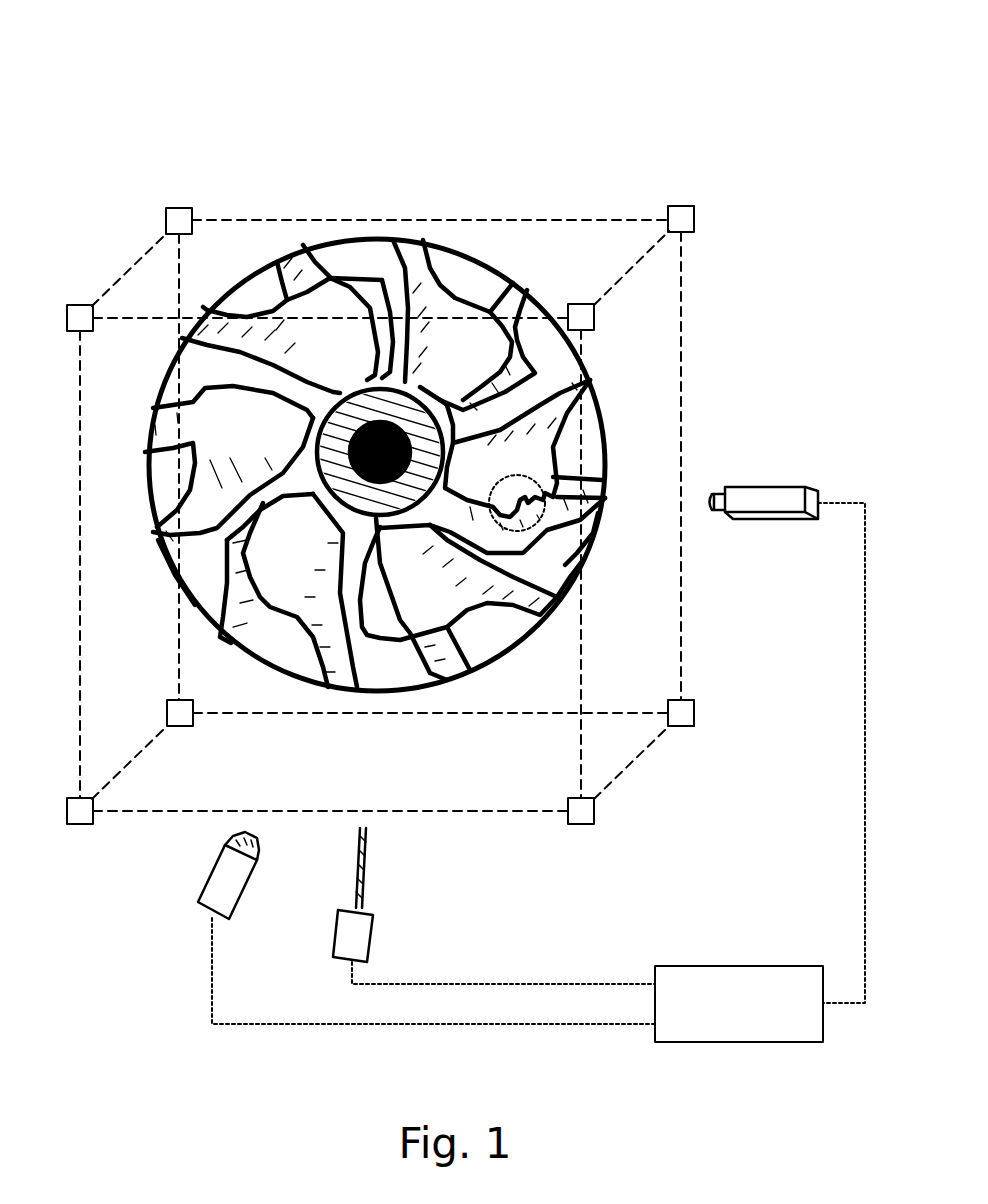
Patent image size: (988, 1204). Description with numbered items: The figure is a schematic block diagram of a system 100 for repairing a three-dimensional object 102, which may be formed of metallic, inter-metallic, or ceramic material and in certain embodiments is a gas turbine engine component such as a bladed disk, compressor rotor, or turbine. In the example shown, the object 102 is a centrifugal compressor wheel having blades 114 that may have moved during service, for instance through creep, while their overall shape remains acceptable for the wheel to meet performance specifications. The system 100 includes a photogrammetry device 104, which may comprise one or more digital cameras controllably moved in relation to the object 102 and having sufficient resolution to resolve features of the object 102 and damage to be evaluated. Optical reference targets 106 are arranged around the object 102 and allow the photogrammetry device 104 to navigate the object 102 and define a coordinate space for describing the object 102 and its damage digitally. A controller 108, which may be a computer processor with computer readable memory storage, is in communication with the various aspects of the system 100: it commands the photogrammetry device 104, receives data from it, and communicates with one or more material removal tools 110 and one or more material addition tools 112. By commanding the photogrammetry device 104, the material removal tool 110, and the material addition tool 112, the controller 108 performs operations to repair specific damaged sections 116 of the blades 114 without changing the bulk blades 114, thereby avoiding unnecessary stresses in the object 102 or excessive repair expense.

The system 100 is at (104, 80).
The three-dimensional object 102 is at (389, 240).
The photogrammetry device 104 is at (770, 487).
The optical reference targets 106 is at (178, 207).
The controller 108 is at (721, 1030).
The material removal tool 110 is at (370, 830).
The material addition tool 112 is at (259, 847).
The blades 114 is at (281, 298).
The damaged sections 116 is at (540, 481).